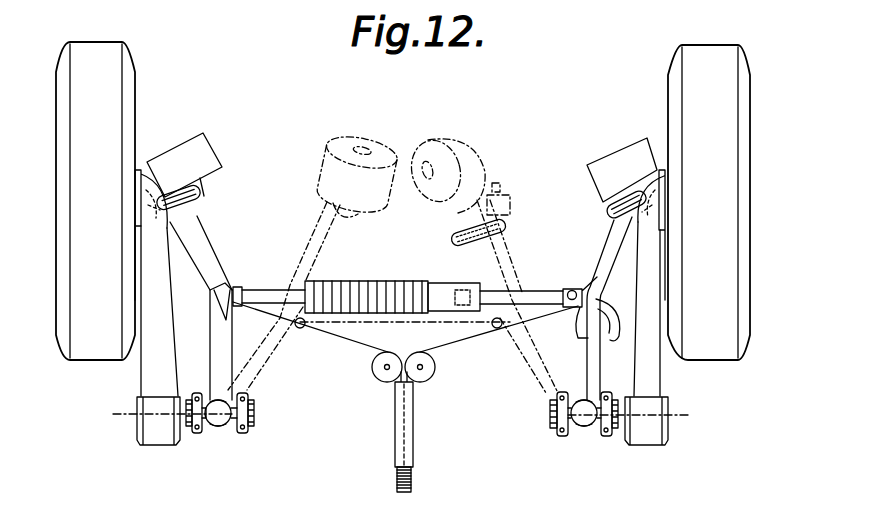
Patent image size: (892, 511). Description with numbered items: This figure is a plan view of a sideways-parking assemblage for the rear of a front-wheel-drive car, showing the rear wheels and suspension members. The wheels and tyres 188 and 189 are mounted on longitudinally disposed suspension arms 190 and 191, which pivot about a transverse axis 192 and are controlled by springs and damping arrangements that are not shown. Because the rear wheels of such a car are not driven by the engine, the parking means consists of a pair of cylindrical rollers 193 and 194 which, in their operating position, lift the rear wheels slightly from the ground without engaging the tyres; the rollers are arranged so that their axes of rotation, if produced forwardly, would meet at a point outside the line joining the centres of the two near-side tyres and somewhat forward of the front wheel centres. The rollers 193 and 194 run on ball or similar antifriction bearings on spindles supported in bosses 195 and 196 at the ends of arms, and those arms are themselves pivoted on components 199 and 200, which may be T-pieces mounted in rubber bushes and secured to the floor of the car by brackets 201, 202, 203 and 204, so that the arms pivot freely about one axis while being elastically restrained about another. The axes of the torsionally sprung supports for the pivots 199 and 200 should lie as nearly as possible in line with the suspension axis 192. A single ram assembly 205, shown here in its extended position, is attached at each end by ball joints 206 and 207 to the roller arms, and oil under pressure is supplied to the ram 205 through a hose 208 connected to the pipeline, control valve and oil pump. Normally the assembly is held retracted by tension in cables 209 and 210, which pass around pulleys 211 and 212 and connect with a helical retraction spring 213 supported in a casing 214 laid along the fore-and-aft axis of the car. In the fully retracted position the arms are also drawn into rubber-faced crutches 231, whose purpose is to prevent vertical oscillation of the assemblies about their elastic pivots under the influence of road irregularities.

The wheel and tyre 188 is at (715, 372).
The wheel and tyre 189 is at (119, 108).
The suspension arm 190 is at (648, 378).
The suspension arm 191 is at (152, 374).
The transverse axis 192 is at (676, 420).
The roller 193 is at (613, 161).
The roller 194 is at (212, 146).
The boss 195 is at (653, 160).
The boss 196 is at (208, 198).
The pivot component 199 is at (583, 428).
The pivot component 200 is at (220, 428).
The bracket 201 is at (608, 437).
The bracket 202 is at (557, 431).
The bracket 203 is at (249, 430).
The bracket 204 is at (198, 435).
The ram assembly 205 is at (363, 285).
The ball joint 206 is at (572, 289).
The ball joint 207 is at (218, 305).
The hose 208 is at (603, 336).
The cable 209 is at (458, 345).
The cable 210 is at (348, 340).
The pulley 211 is at (426, 378).
The pulley 212 is at (385, 378).
The helical retraction spring 213 is at (396, 485).
The spring casing 214 is at (395, 447).
The rubber faced crutch 231 is at (465, 248).